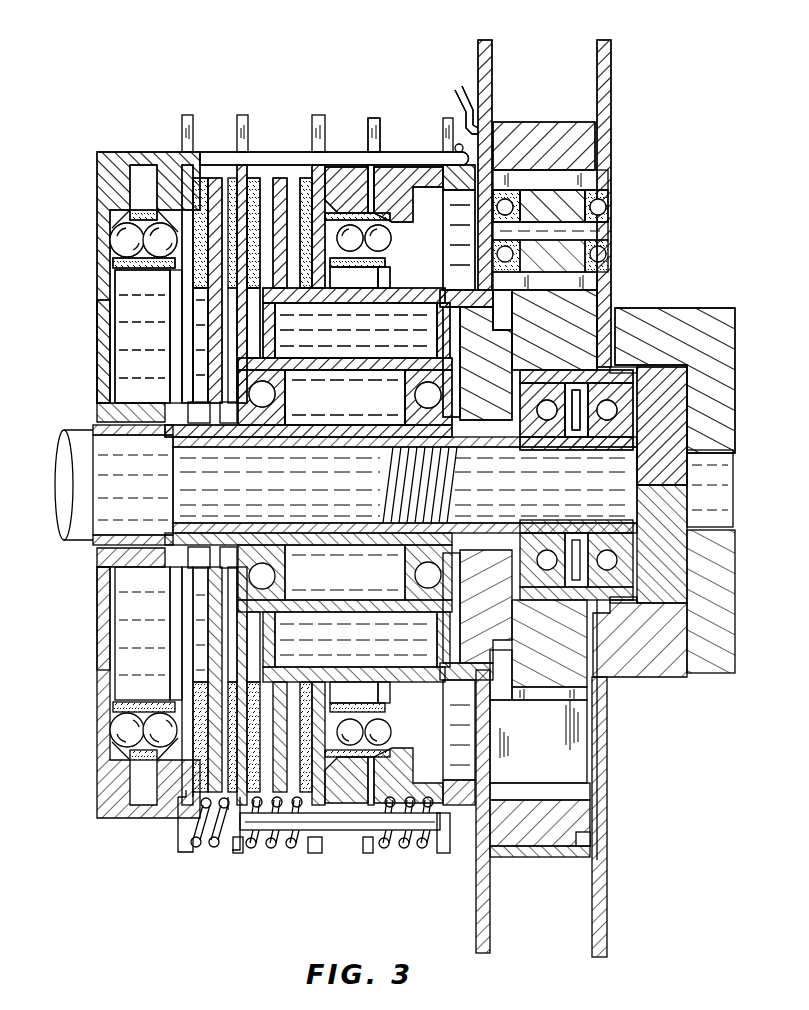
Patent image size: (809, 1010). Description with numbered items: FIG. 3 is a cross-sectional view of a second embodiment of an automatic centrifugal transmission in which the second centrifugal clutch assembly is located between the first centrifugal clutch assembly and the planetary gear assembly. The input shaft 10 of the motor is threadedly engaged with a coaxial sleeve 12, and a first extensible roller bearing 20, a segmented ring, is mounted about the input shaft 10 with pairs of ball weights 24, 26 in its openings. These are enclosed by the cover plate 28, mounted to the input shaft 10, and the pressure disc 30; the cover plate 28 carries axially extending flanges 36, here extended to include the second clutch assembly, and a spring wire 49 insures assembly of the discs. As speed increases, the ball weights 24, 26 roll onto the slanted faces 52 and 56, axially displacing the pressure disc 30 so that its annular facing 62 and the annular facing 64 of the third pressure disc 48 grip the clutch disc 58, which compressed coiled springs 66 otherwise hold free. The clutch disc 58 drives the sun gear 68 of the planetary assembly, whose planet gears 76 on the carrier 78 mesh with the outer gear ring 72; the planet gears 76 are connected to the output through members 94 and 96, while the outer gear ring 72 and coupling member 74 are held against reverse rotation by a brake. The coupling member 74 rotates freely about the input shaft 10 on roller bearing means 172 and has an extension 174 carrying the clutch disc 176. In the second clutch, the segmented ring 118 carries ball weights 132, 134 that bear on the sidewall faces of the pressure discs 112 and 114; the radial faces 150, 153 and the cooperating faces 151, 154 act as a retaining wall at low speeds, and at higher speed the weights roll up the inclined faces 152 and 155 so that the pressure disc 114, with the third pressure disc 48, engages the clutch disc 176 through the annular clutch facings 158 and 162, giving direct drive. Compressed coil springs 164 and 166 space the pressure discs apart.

The input shaft 10 is at (75, 548).
The sleeve 12 is at (250, 446).
The first extensible roller bearing 20 is at (100, 372).
The ball weight 24 is at (135, 257).
The ball weight 26 is at (118, 272).
The cover plate 28 is at (97, 170).
The pressure disc 30 is at (181, 128).
The flanges 36 is at (427, 152).
The third pressure disc 48 is at (242, 114).
The spring wire 49 is at (463, 130).
The slanted face 52 is at (125, 207).
The slanted face 56 is at (115, 232).
The clutch disc 58 is at (201, 178).
The annular facing 62 is at (182, 142).
The annular facing 64 is at (217, 178).
The coiled springs 66 is at (210, 843).
The sun gear 68 is at (605, 292).
The outer gear ring 72 is at (520, 122).
The coupling member 74 is at (502, 41).
The planet gears 76 is at (598, 198).
The carrier 78 is at (612, 58).
The member 94 is at (707, 673).
The member 96 is at (655, 603).
The pressure disc 112 is at (388, 113).
The pressure disc 114 is at (330, 109).
The segmented ring 118 is at (358, 280).
The ball weight 132 is at (383, 303).
The ball weight 134 is at (340, 300).
The radial face 150 is at (395, 214).
The face 151 is at (392, 196).
The inclined face 152 is at (375, 180).
The radial face 153 is at (330, 303).
The face 154 is at (338, 212).
The inclined face 155 is at (345, 212).
The annular clutch facing 158 is at (308, 178).
The annular clutch facing 162 is at (255, 176).
The compressed coil springs 164 is at (418, 843).
The compressed coil springs 166 is at (285, 843).
The roller bearing means 172 is at (403, 408).
The extension 174 is at (383, 282).
The clutch disc 176 is at (280, 178).